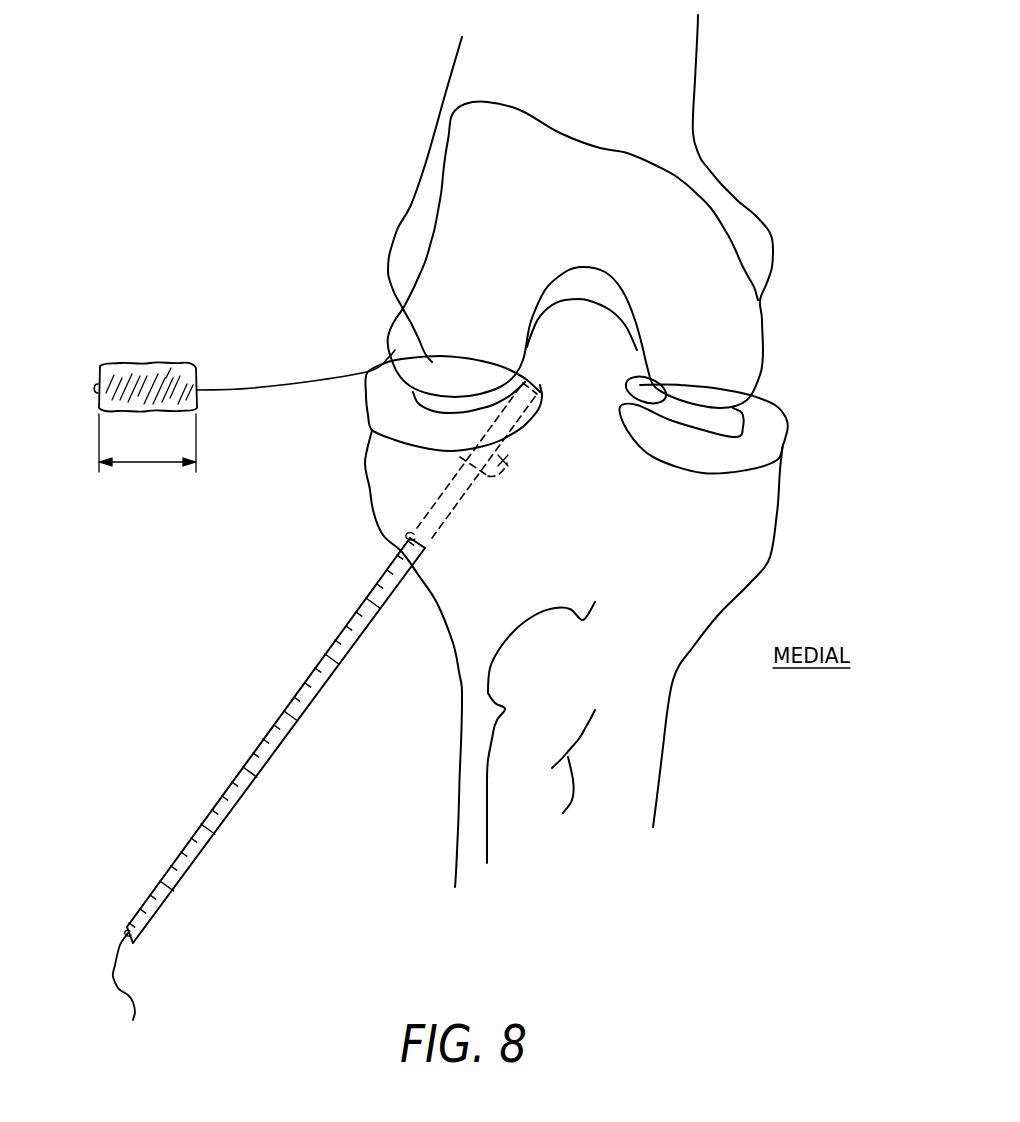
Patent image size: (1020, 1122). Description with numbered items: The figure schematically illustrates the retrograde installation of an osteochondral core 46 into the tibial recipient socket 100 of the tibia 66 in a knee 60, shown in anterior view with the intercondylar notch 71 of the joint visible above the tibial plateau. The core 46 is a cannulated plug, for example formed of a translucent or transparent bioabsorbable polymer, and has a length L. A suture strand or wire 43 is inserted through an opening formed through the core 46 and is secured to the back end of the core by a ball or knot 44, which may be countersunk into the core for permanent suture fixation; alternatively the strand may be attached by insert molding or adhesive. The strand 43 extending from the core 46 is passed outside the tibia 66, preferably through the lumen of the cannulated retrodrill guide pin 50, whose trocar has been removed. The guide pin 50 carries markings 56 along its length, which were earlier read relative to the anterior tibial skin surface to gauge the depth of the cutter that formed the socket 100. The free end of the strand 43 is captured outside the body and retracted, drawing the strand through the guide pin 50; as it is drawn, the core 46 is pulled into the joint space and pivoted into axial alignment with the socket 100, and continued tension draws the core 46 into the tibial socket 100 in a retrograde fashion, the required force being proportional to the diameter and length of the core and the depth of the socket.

The suture strand 43 is at (287, 390).
The knot 44 is at (95, 389).
The osteochondral core 46 is at (113, 387).
The retrodrill guide pin 50 is at (275, 738).
The markings 56 is at (197, 862).
The knee 60 is at (420, 218).
The tibia 66 is at (760, 497).
The intercondylar notch 71 is at (583, 340).
The tibial recipient socket 100 is at (510, 463).